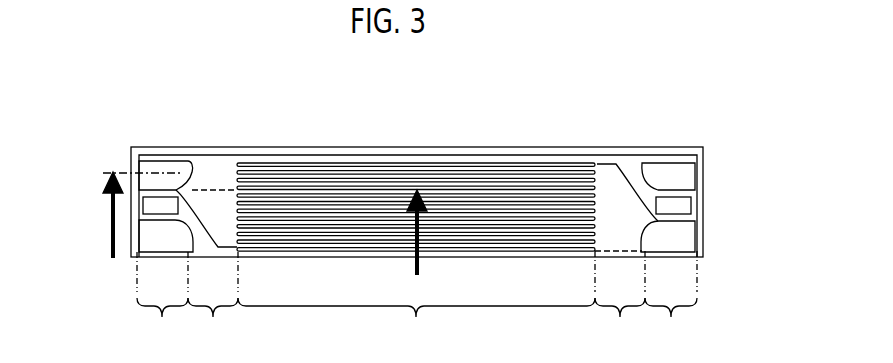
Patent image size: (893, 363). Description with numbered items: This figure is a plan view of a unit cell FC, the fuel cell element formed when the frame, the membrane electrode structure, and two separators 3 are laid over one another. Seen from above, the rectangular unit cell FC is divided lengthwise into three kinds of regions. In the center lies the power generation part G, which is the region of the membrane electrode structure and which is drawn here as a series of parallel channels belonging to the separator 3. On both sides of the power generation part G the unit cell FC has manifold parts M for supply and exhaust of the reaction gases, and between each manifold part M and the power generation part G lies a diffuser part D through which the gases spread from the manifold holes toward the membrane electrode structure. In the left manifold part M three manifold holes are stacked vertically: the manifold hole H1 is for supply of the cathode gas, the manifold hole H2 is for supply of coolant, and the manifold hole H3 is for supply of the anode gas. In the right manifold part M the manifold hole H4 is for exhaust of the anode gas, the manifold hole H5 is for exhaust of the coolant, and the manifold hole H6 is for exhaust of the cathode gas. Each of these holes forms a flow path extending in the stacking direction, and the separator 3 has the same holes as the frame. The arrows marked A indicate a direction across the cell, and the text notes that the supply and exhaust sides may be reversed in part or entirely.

The unit cell FC is at (445, 133).
The separator 3 is at (402, 182).
The manifold hole H1 is at (155, 180).
The manifold hole H2 is at (163, 205).
The manifold hole H3 is at (147, 231).
The manifold hole H4 is at (680, 176).
The manifold hole H5 is at (680, 210).
The manifold hole H6 is at (680, 235).
The viewing direction arrow A is at (265, 233).
The manifold part M is at (417, 302).
The diffuser part D is at (416, 302).
The power generation part G is at (416, 326).